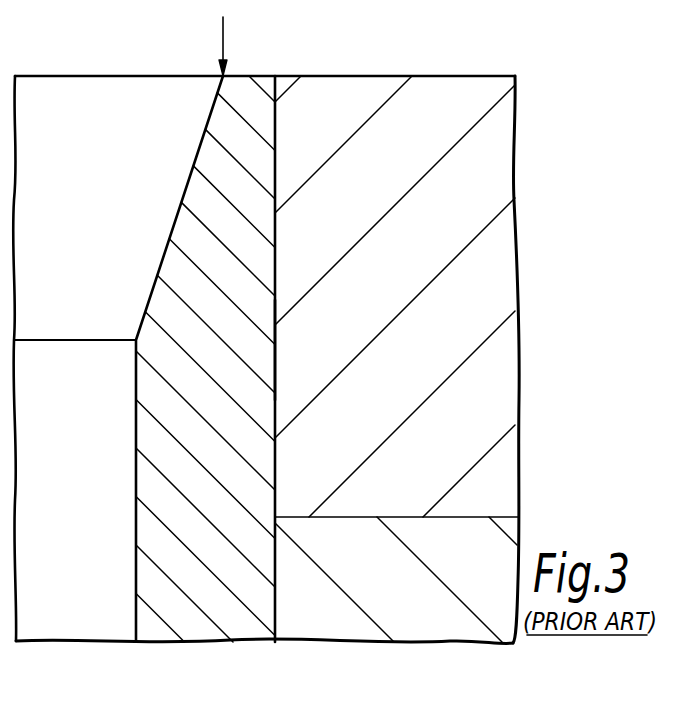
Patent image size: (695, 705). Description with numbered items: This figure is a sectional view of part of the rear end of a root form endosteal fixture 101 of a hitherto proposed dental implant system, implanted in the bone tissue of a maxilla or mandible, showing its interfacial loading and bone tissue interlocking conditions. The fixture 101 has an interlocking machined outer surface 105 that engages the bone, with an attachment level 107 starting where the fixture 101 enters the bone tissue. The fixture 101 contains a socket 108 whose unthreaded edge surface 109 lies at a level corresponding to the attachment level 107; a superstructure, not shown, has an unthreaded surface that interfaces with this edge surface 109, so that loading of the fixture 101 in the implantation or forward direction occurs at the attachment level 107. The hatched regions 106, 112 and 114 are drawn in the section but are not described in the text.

The root form endosteal fixture 101 is at (78, 74).
The interlocking machined outer surface 105 is at (277, 353).
The slanted hatched layer 106 is at (252, 605).
The attachment level 107 is at (280, 76).
The socket 108 is at (100, 217).
The unthreaded edge surface 109 is at (222, 76).
The right hatched region 112 is at (480, 262).
The bottom right hatched region 114 is at (455, 545).